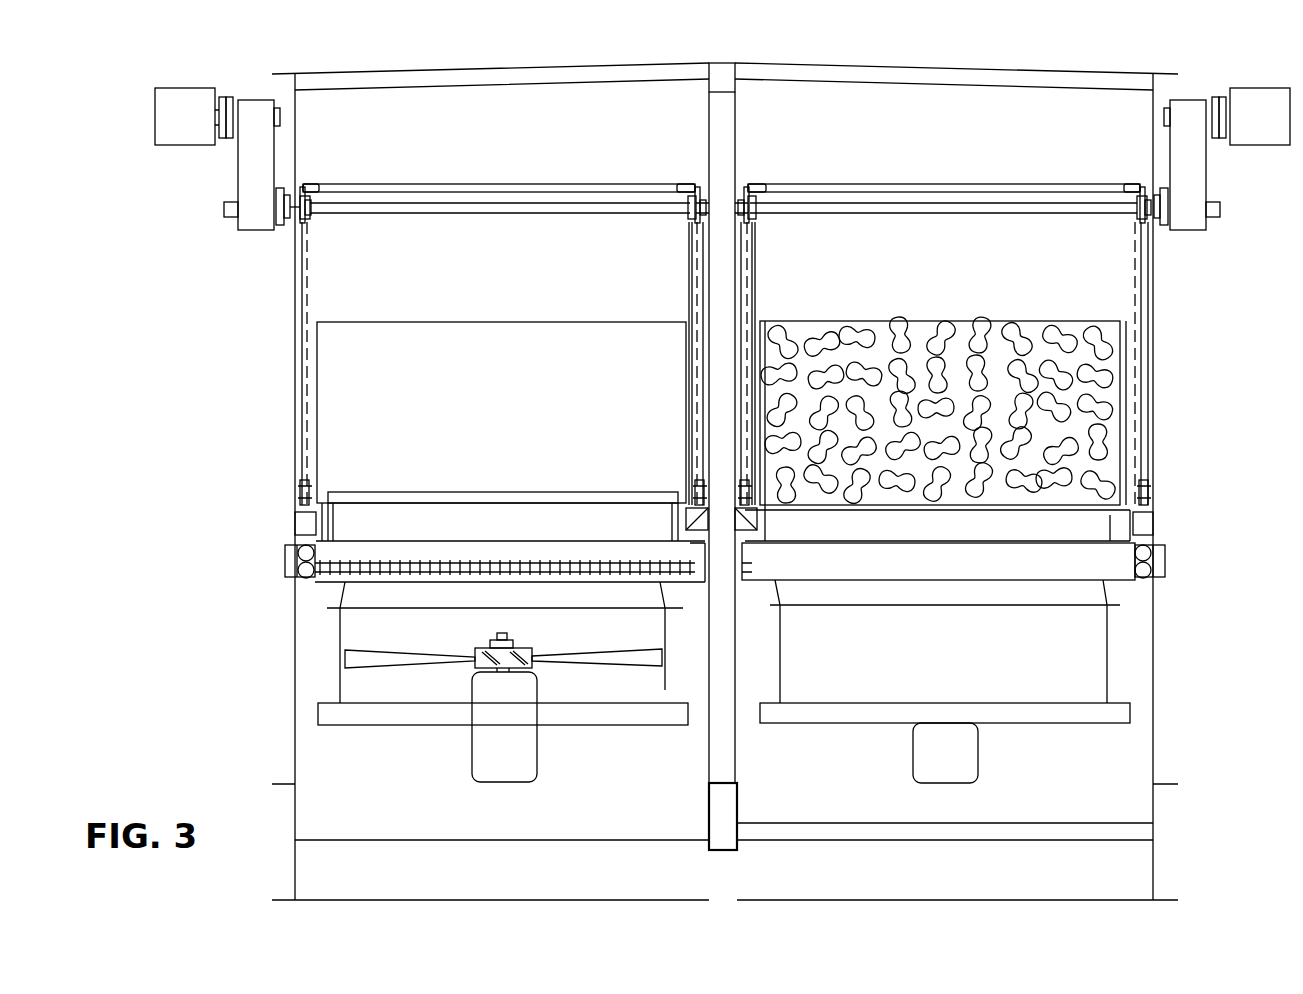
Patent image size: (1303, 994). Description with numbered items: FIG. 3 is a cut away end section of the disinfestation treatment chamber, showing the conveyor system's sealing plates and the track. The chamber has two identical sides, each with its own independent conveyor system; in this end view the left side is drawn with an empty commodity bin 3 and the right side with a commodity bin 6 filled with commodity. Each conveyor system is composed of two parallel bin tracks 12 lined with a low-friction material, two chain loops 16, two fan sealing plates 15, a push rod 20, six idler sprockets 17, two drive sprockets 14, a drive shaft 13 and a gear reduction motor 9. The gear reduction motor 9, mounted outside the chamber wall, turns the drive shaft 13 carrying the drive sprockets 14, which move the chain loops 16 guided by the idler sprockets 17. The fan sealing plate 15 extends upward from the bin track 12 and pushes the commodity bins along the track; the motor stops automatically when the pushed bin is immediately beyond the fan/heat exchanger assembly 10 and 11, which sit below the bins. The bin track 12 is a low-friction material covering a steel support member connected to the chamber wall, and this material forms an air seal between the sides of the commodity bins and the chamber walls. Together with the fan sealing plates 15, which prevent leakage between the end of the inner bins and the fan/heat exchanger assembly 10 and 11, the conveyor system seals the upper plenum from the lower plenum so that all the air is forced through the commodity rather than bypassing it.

The commodity bin 3 is at (510, 396).
The commodity bin 6 is at (985, 352).
The gear reduction motor 9 is at (183, 133).
The fan/heat exchanger assembly 10 is at (518, 740).
The fan/heat exchanger assembly 11 is at (503, 562).
The bin track 12 is at (334, 542).
The drive shaft 13 is at (514, 208).
The drive sprocket 14 is at (312, 221).
The fan sealing plate 15 is at (465, 492).
The chain loop 16 is at (308, 305).
The idler sprocket 17 is at (310, 486).
The push rod 20 is at (488, 184).